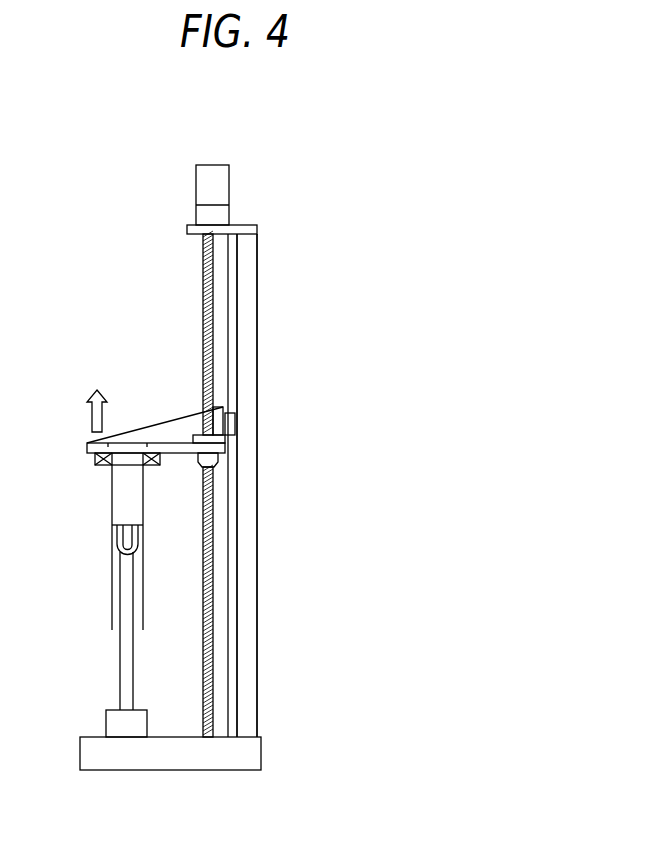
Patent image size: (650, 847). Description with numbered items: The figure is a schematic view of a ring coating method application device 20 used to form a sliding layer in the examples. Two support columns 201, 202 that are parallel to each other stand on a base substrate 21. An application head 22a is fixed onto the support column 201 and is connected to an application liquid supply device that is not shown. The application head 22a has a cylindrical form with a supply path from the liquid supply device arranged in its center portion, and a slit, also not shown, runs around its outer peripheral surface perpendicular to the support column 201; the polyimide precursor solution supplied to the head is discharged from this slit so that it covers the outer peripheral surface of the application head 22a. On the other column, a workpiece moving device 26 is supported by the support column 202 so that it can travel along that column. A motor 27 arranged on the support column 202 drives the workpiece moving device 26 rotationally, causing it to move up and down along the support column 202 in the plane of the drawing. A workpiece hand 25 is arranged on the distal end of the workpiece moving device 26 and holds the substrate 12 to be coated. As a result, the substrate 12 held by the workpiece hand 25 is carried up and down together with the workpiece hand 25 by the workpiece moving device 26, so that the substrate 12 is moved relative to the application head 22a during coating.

The ring coating method application device 20 is at (324, 220).
The motor 27 is at (210, 203).
The workpiece moving device 26 is at (232, 407).
The workpiece hand 25 is at (99, 466).
The application head 22a is at (112, 537).
The substrate 12 is at (143, 595).
The support column 201 is at (133, 668).
The support column 202 is at (248, 693).
The substrate 21 is at (167, 760).